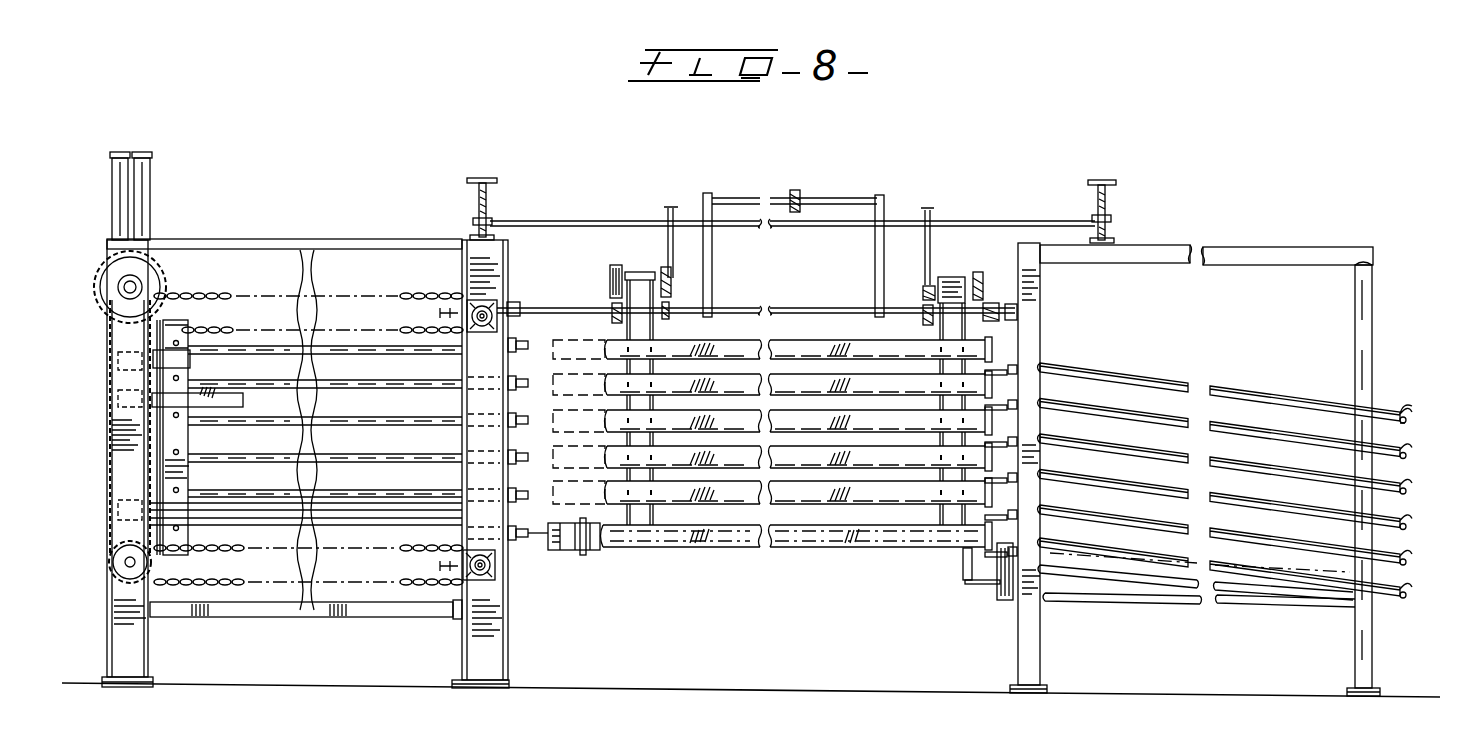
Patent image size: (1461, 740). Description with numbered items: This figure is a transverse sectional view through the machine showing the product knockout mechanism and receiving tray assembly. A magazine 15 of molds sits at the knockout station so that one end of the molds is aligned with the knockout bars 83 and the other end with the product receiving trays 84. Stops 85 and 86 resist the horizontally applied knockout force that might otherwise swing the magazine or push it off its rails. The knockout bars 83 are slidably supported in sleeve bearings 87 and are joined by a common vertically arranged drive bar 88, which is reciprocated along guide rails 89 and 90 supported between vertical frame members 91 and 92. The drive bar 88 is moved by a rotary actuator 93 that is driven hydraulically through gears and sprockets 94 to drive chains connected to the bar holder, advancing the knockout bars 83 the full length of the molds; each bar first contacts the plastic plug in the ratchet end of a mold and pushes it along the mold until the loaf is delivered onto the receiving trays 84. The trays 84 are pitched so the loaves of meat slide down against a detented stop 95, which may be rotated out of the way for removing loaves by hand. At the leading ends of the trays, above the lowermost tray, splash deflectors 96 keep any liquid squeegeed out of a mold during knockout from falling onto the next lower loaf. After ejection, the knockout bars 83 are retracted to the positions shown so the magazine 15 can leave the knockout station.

The magazine 15 is at (946, 276).
The knockout bars 83 is at (522, 545).
The product receiving trays 84 is at (1300, 437).
The stop 85 is at (973, 323).
The stop 86 is at (967, 556).
The sleeve bearings 87 is at (516, 455).
The drive bar 88 is at (170, 532).
The guide rail 89 is at (264, 352).
The guide rail 90 is at (273, 510).
The vertical frame member 91 is at (126, 637).
The vertical frame member 92 is at (488, 655).
The rotary actuator 93 is at (146, 200).
The gears and sprockets 94 is at (185, 286).
The detented stop 95 is at (1406, 452).
The splash deflectors 96 is at (1000, 405).